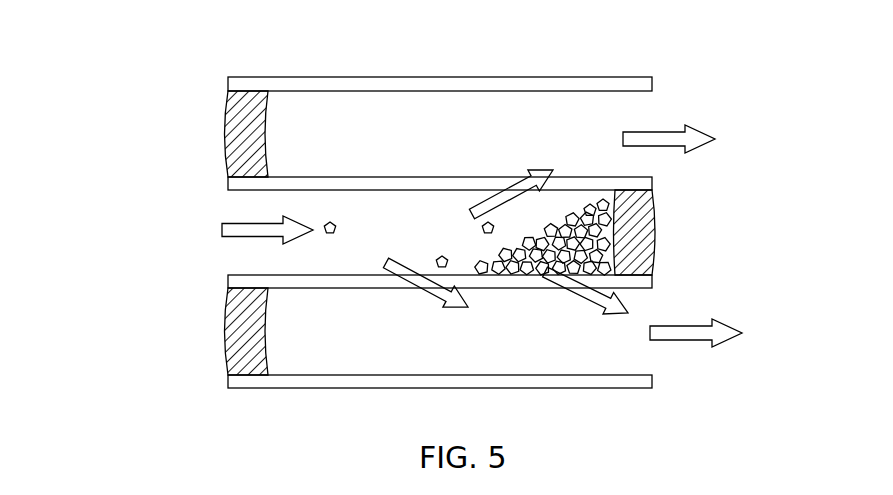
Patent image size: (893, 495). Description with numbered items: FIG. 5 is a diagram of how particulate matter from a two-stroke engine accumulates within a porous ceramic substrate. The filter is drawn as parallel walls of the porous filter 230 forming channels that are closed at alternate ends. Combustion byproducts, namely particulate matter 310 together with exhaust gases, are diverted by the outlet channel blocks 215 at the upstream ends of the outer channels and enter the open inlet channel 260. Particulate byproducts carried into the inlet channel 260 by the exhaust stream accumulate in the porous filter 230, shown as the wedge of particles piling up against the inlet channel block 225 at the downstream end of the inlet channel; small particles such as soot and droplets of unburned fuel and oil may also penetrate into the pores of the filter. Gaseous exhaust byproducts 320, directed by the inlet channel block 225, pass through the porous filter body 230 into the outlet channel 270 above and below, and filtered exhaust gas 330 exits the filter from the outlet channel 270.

The outlet channel block 215 is at (226, 127).
The inlet channel block 225 is at (655, 210).
The porous filter 230 is at (323, 83).
The inlet channel 260 is at (243, 260).
The outlet channel 270 is at (557, 107).
The particulate matter 310 is at (327, 222).
The gaseous exhaust byproducts 320 is at (420, 290).
The filtered exhaust gas 330 is at (673, 130).